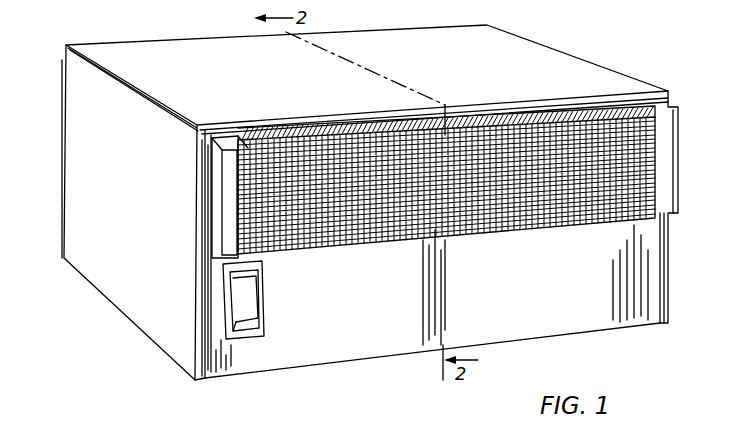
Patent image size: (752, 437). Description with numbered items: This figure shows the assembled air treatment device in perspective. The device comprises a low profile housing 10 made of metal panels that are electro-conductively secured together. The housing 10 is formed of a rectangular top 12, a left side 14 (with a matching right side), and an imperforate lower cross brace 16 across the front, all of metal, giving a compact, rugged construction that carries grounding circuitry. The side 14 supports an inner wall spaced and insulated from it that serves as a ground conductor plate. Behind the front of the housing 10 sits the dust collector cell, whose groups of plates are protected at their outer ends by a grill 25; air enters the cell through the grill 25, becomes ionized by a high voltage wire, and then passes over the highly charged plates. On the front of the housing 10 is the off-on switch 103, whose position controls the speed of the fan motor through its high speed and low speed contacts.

The housing 10 is at (387, 198).
The rectangular top 12 is at (497, 81).
The left side 14 is at (142, 201).
The imperforate lower cross brace 16 is at (556, 283).
The grill 25 is at (650, 201).
The off-on switch 103 is at (258, 296).